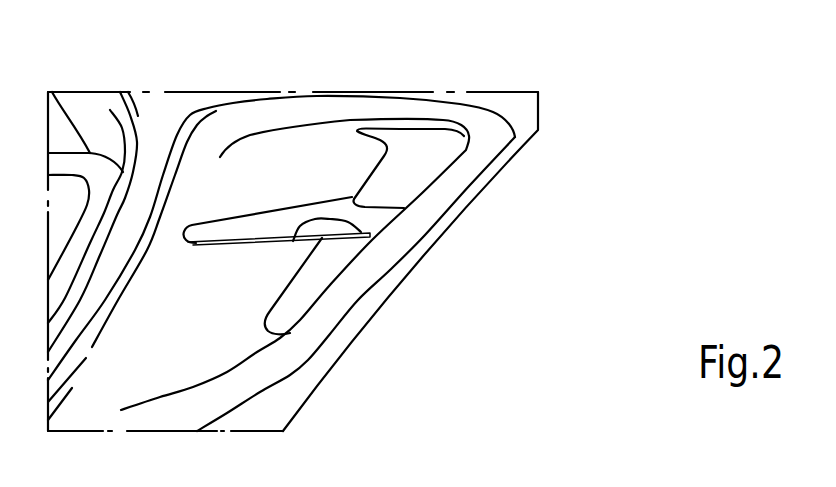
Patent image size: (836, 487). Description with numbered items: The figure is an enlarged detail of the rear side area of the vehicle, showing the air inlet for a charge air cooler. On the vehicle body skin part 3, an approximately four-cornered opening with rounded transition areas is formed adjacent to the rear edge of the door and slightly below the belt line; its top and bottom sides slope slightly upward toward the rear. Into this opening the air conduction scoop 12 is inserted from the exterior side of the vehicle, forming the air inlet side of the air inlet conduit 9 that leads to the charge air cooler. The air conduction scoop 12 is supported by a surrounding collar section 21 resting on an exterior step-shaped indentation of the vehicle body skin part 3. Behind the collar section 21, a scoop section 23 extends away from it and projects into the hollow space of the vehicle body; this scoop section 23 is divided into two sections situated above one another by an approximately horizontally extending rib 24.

The vehicle body skin part 3 is at (166, 110).
The air conduction scoop 12 is at (387, 93).
The air inlet conduit 9 is at (400, 177).
The rib 24 is at (357, 236).
The collar section 21 is at (345, 297).
The scoop section 23 is at (247, 272).